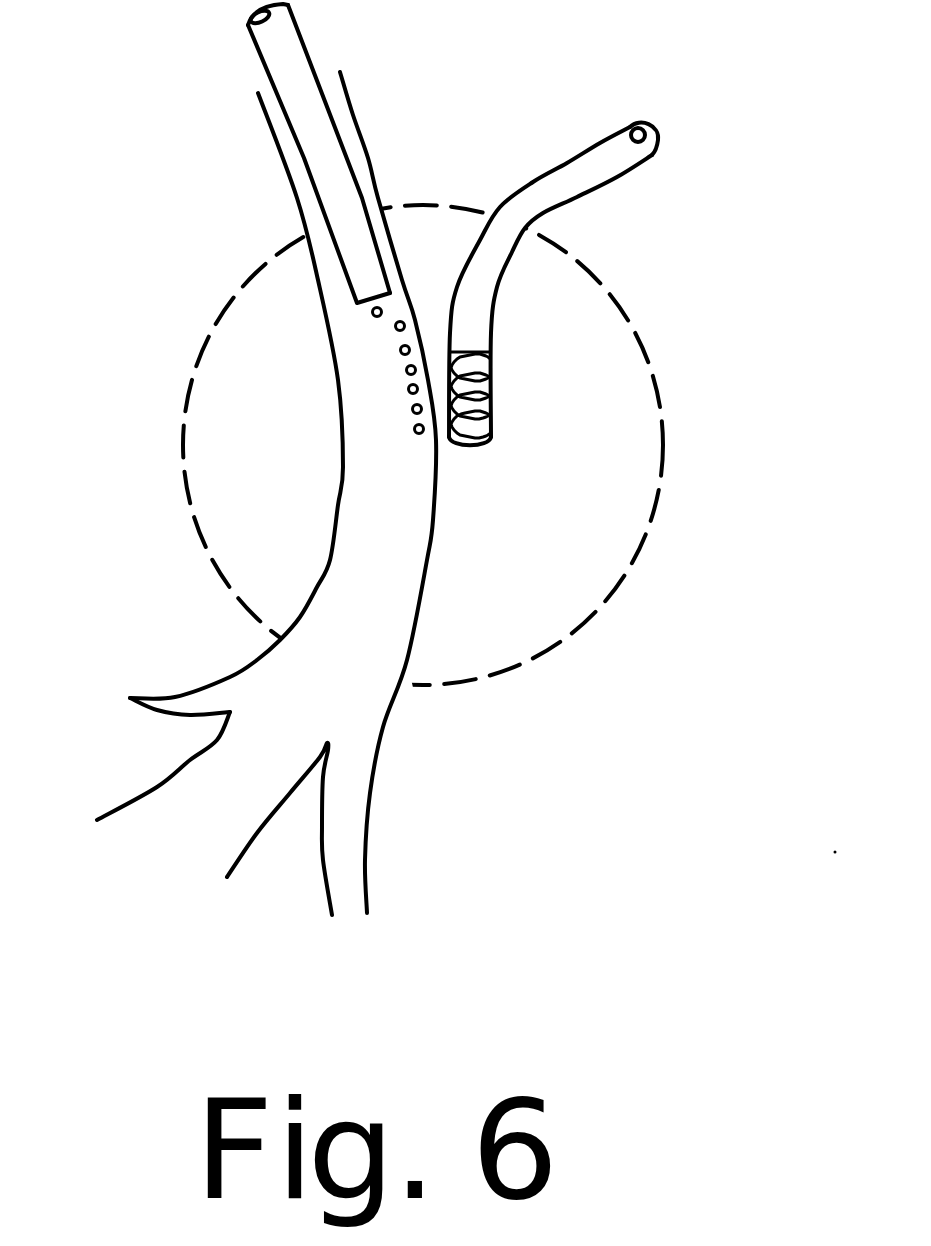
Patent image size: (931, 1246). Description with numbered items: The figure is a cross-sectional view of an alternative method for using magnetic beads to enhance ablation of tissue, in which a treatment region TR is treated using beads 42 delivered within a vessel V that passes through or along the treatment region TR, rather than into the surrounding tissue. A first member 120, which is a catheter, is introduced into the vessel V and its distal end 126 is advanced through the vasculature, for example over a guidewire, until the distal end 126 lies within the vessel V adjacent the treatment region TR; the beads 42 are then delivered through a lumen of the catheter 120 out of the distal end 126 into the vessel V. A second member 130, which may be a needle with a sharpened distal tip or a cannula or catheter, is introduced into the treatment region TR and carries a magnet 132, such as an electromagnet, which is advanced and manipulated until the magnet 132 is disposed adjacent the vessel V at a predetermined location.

The first member 120 is at (295, 153).
The distal end 126 is at (320, 213).
The second member 130 is at (652, 284).
The magnet 132 is at (493, 388).
The beads 42 is at (413, 427).
The treatment region TR is at (583, 623).
The vessel V is at (377, 757).